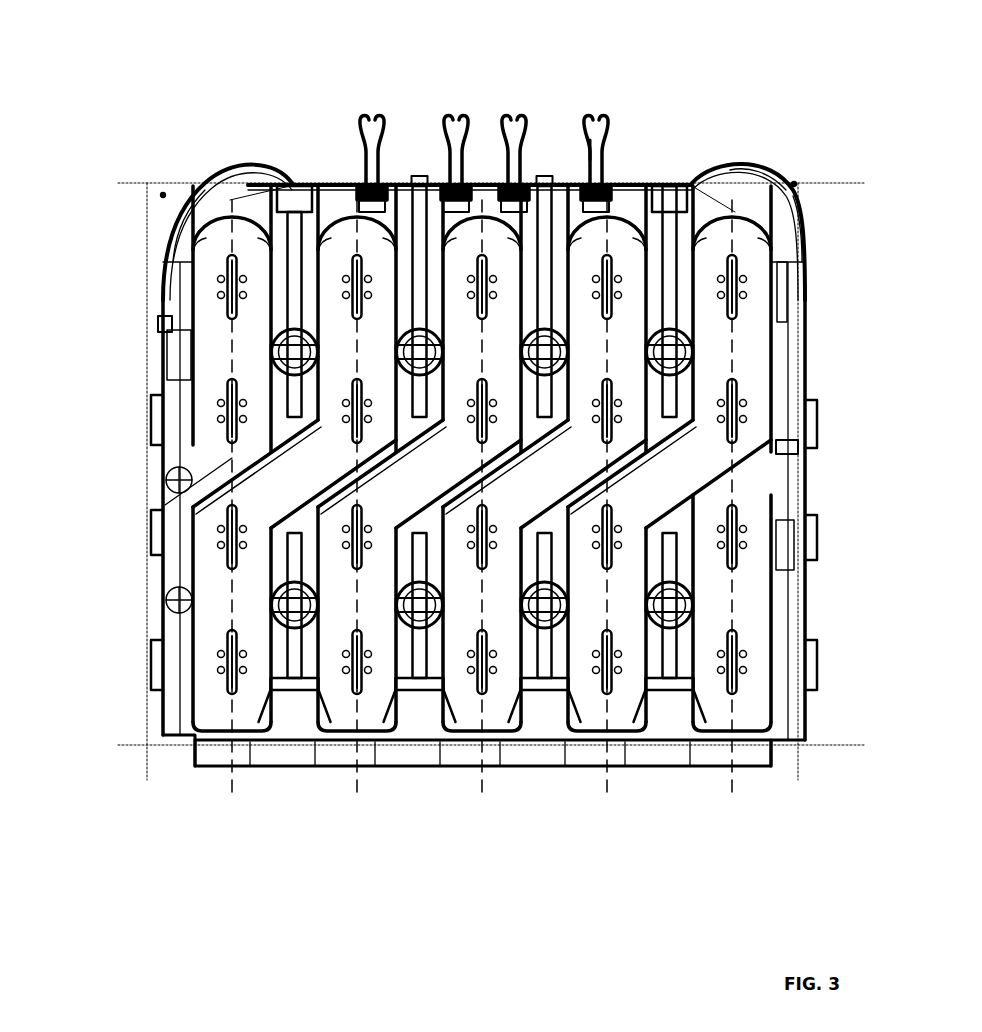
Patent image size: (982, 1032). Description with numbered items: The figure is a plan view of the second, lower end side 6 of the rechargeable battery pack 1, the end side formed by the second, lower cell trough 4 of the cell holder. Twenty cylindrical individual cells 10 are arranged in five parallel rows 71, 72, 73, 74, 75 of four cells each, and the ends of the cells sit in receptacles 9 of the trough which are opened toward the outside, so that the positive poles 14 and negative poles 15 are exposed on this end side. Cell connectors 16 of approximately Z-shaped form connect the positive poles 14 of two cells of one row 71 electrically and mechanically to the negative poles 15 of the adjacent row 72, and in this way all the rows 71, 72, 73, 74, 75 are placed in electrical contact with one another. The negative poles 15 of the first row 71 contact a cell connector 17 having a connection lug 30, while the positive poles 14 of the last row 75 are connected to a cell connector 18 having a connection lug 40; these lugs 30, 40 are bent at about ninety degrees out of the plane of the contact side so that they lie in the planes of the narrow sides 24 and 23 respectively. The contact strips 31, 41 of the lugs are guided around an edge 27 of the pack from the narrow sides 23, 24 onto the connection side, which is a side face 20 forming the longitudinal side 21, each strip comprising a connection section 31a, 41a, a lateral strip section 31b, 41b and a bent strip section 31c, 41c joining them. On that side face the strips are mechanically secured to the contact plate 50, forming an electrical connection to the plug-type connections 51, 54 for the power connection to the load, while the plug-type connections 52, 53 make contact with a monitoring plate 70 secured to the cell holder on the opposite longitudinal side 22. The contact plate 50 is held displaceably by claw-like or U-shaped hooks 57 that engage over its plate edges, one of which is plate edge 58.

The rechargeable battery pack 1 is at (138, 117).
The second, lower cell trough 4 is at (657, 690).
The second, lower end side 6 is at (405, 537).
The receptacle 9 is at (205, 245).
The individual cell 10 is at (802, 325).
The positive pole 14 is at (228, 540).
The negative pole 15 is at (228, 290).
The cell connector 16 is at (285, 478).
The cell connector 17 is at (211, 355).
The cell connector 18 is at (711, 610).
The side face 20 is at (320, 168).
The longitudinal side 21 is at (770, 176).
The longitudinal side 22 is at (800, 775).
The narrow side 23 is at (808, 200).
The narrow side 24 is at (178, 735).
The edge 27 is at (162, 194).
The connection lug 30 is at (160, 368).
The contact strip 31 is at (208, 160).
The connection section 31a is at (285, 182).
The lateral strip section 31b is at (158, 324).
The bent strip section 31c is at (180, 228).
The connection lug 40 is at (798, 595).
The contact strip 41 is at (746, 156).
The connection section 41a is at (692, 183).
The lateral strip section 41b is at (790, 446).
The bent strip section 41c is at (803, 206).
The contact plate 50 is at (668, 185).
The plug-type connection 51 is at (366, 122).
The plug-type connection 52 is at (450, 122).
The plug-type connection 53 is at (508, 122).
The plug-type connection 54 is at (603, 122).
The hook 57 is at (417, 176).
The plate edge 58 is at (589, 125).
The monitoring plate 70 is at (455, 785).
The row 71 is at (228, 805).
The row 72 is at (354, 805).
The row 73 is at (486, 805).
The row 74 is at (610, 805).
The row 75 is at (736, 805).